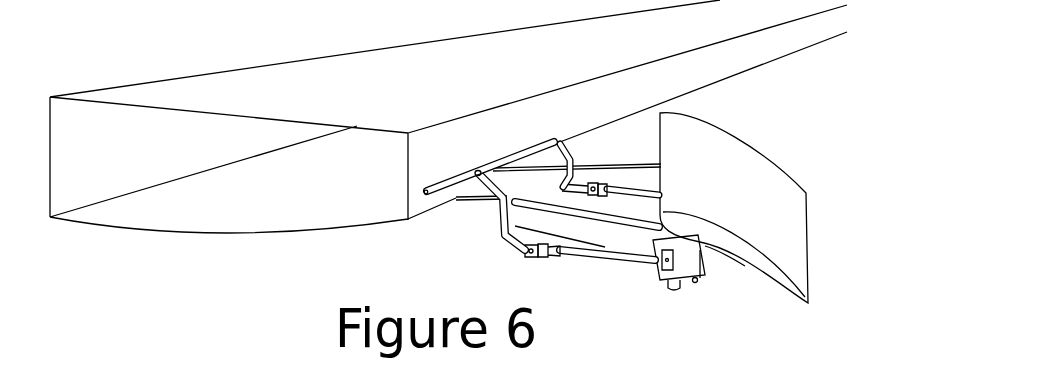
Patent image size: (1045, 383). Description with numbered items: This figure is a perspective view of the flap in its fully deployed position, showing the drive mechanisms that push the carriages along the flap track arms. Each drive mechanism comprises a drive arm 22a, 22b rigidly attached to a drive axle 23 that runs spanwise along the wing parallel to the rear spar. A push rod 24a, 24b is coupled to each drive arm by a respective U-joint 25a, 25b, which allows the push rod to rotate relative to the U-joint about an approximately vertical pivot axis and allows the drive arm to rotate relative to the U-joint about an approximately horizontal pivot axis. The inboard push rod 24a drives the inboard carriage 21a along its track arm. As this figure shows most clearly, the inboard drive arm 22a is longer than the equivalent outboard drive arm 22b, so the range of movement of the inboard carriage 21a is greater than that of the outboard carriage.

The carriage 21a is at (697, 282).
The drive arm 22a is at (503, 238).
The drive arm 22b is at (563, 150).
The drive axle 23 is at (500, 163).
The push rod 24a is at (620, 259).
The push rod 24b is at (642, 190).
The U-joint 25a is at (523, 251).
The U-joint 25b is at (584, 194).